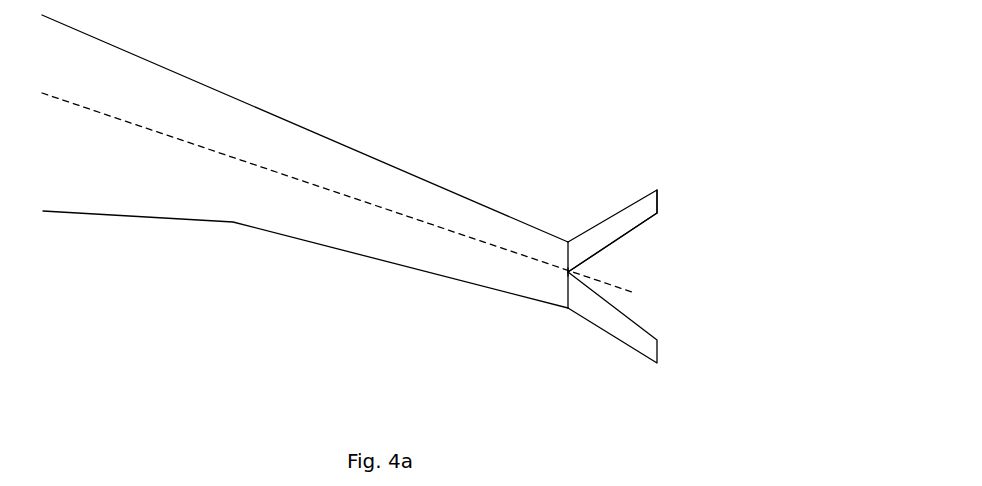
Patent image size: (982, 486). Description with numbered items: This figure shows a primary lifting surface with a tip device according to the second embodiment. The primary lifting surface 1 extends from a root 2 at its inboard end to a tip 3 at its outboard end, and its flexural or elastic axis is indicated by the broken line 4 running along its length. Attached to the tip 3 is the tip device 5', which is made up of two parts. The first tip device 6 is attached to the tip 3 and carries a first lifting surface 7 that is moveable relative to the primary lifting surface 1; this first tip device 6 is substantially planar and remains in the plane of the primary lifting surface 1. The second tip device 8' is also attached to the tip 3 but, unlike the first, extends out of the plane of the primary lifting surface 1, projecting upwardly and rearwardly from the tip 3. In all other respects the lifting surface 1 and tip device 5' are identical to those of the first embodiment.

The primary lifting surface 1 is at (381, 120).
The root 2 is at (77, 242).
The tip 3 is at (566, 325).
The flexural axis 4 is at (527, 283).
The tip device 5' is at (639, 148).
The first tip device 6 is at (678, 194).
The first lifting surface 7 is at (609, 227).
The second tip device 8' is at (689, 287).